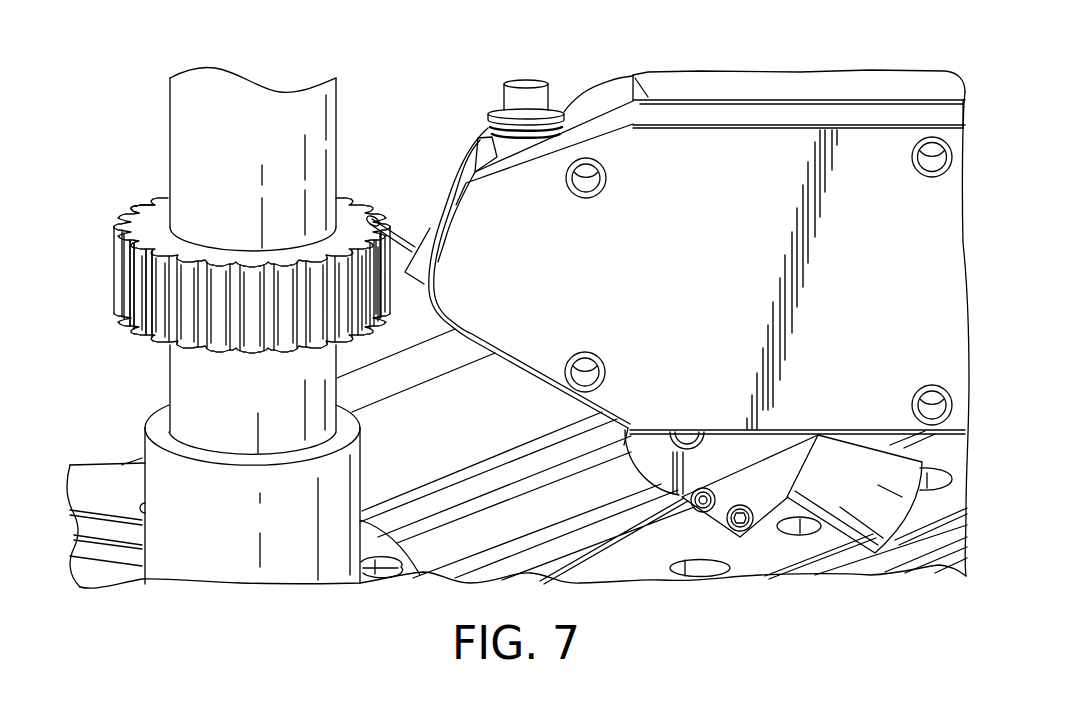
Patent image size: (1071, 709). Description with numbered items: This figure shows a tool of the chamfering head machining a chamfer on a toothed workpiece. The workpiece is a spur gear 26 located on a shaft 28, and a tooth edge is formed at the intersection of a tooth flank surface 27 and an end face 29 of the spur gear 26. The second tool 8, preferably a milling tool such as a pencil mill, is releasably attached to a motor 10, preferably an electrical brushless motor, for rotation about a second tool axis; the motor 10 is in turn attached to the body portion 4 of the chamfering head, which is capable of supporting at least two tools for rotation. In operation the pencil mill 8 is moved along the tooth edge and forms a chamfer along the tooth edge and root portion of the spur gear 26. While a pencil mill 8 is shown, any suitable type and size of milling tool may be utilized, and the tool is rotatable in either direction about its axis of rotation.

The body portion 4 is at (745, 147).
The second tool 8 is at (386, 225).
The motor 10 is at (832, 488).
The spur gear 26 is at (116, 266).
The tooth flank surface 27 is at (140, 327).
The shaft 28 is at (183, 120).
The end face 29 is at (153, 224).